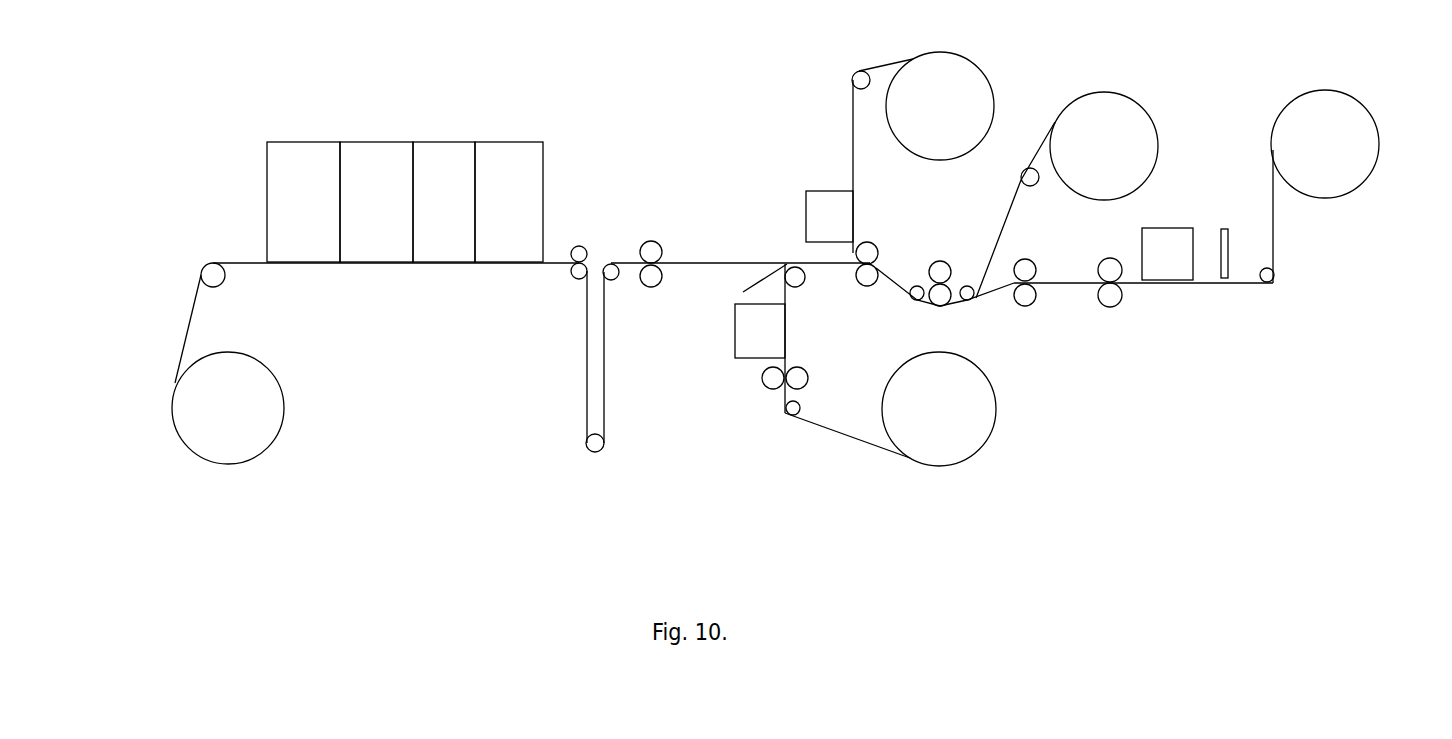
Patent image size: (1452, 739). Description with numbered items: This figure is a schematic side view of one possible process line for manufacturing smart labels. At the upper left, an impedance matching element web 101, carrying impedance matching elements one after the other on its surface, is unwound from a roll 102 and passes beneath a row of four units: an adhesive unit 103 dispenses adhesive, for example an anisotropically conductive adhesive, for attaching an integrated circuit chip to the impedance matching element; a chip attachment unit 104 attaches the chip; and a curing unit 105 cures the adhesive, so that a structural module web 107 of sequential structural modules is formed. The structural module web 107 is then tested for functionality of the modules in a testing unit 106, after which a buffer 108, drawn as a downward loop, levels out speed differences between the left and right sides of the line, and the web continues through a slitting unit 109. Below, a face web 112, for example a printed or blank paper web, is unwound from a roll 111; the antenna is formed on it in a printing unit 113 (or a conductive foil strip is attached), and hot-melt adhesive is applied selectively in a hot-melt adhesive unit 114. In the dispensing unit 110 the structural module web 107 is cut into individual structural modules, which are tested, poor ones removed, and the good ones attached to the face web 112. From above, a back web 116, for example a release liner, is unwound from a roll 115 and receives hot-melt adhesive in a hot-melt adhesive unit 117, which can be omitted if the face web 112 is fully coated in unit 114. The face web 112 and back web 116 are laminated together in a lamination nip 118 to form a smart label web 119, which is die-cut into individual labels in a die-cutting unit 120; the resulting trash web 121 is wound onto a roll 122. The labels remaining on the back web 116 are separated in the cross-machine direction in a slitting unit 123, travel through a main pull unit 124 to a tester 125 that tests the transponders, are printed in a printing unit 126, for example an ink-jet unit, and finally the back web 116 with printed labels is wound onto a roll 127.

The impedance matching element web 101 is at (188, 306).
The roll 102 is at (228, 438).
The adhesive unit 103 is at (298, 162).
The chip attachment unit 104 is at (376, 155).
The curing unit 105 is at (444, 158).
The testing unit 106 is at (503, 155).
The structural module web 107 is at (556, 259).
The buffer 108 is at (578, 423).
The slitting unit 109 is at (651, 250).
The dispensing unit 110 is at (790, 264).
The roll 111 is at (980, 408).
The face web 112 is at (833, 428).
The printing unit 113 is at (765, 384).
The hot-melt adhesive unit 114 is at (740, 330).
The roll 115 is at (975, 88).
The back web 116 is at (876, 66).
The hot-melt adhesive unit 117 is at (810, 208).
The lamination nip 118 is at (877, 263).
The smart label web 119 is at (890, 288).
The die-cutting unit 120 is at (952, 275).
The trash web 121 is at (1002, 212).
The roll 122 is at (1120, 120).
The slitting unit 123 is at (1025, 262).
The main pull unit 124 is at (1107, 260).
The tester 125 is at (1162, 243).
The printing unit 126 is at (1227, 230).
The roll 127 is at (1333, 127).